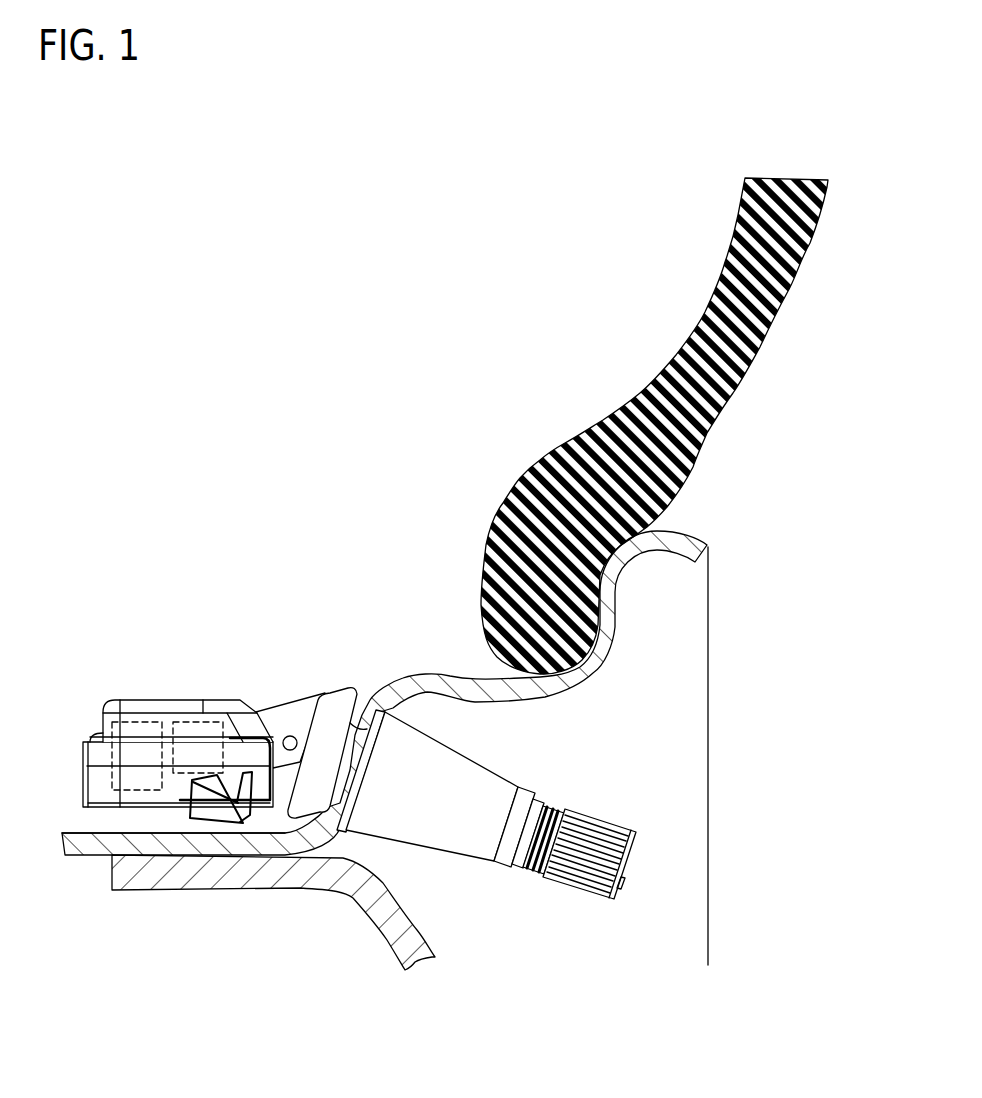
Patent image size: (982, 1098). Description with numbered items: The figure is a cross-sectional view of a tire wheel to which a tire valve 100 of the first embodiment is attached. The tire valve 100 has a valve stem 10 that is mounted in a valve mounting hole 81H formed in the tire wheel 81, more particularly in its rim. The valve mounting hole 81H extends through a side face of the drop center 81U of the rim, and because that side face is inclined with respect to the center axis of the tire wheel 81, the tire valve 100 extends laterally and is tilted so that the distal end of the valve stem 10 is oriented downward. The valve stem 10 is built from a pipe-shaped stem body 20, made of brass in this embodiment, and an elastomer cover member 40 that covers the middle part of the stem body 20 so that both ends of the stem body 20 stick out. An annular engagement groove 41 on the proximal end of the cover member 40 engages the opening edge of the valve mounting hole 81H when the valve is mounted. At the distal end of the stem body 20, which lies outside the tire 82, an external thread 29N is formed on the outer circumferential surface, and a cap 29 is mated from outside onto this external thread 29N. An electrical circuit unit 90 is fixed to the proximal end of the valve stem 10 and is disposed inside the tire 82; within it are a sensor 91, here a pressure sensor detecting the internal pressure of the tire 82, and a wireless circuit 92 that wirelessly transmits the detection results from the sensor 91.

The valve stem 10 is at (483, 861).
The stem body 20 is at (180, 699).
The cap 29 is at (603, 838).
The external thread 29N is at (548, 808).
The cover member 40 is at (410, 820).
The engagement groove 41 is at (335, 808).
The tire wheel 81 is at (650, 548).
The valve mounting hole 81H is at (355, 728).
The drop center 81U is at (70, 830).
The tire 82 is at (687, 462).
The electrical circuit unit 90 is at (118, 700).
The sensor 91 is at (148, 720).
The wireless circuit 92 is at (185, 722).
The tire valve 100 is at (288, 665).